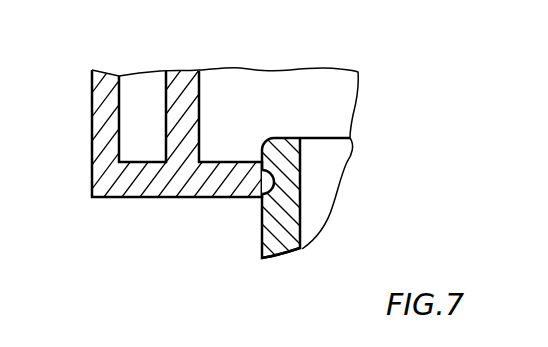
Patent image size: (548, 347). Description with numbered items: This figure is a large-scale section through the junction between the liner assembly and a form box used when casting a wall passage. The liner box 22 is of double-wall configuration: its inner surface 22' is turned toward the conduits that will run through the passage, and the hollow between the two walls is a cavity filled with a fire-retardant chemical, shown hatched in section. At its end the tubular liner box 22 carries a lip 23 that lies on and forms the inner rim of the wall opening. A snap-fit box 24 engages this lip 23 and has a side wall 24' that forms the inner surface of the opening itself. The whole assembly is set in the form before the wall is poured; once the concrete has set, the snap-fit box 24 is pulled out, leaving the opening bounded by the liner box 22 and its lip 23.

The liner box 22 is at (180, 133).
The inner surface 22' is at (204, 100).
The lips 23 is at (236, 206).
The snap-fit boxes 24 is at (310, 202).
The side walls 24' is at (298, 261).